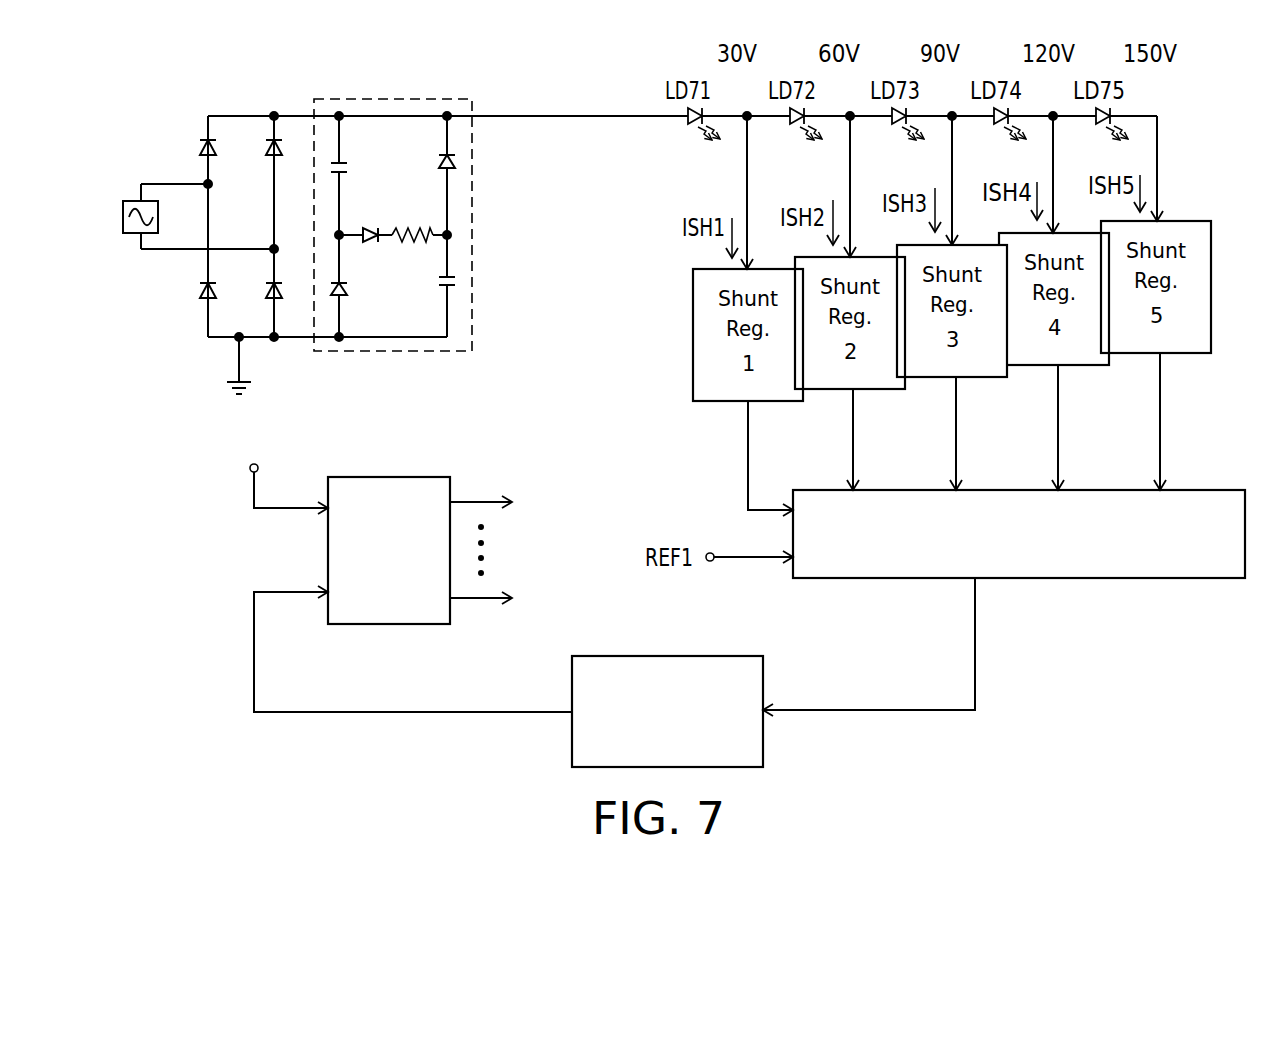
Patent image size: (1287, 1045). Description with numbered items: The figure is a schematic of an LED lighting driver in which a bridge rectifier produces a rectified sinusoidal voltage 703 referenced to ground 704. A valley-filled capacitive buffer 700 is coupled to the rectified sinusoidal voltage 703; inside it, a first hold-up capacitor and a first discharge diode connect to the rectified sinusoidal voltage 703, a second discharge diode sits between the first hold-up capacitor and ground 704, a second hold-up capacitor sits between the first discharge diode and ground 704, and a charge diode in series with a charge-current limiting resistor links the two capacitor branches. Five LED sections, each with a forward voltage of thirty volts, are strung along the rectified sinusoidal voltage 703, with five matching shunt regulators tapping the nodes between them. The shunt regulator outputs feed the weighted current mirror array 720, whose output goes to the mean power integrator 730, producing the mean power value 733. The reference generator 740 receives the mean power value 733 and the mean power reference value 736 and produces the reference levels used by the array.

The valley-filled capacitive buffer 700 is at (472, 303).
The rectified sinusoidal voltage 703 is at (538, 116).
The ground 704 is at (239, 365).
The weighted current mirror array 720 is at (1178, 578).
The mean power integrator 730 is at (763, 677).
The mean power value 733 is at (520, 712).
The mean power reference value 736 is at (290, 507).
The reference generator 740 is at (388, 477).